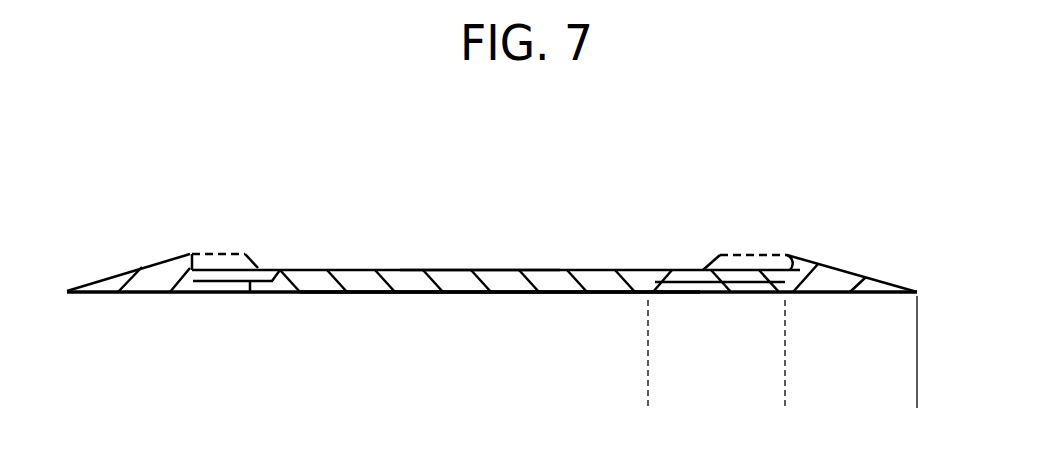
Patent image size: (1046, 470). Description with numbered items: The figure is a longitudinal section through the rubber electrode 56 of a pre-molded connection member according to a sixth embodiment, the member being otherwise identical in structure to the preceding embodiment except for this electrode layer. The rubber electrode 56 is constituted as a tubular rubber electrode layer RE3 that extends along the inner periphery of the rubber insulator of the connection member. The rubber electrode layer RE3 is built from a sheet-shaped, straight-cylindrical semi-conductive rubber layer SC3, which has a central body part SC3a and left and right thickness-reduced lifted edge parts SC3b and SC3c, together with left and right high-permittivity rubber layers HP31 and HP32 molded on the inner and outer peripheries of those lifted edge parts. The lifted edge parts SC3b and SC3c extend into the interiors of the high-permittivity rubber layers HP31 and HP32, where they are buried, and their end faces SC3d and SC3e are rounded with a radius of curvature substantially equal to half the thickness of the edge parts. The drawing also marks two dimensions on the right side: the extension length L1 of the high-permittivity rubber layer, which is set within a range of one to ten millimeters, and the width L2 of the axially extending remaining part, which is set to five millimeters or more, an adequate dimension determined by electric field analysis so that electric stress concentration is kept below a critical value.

The rubber electrode 56 is at (497, 247).
The rubber electrode layer RE3 is at (573, 262).
The semi-conductive rubber layer SC3 is at (609, 302).
The body part SC3a is at (420, 300).
The left lifted edge part SC3b is at (262, 300).
The right lifted edge part SC3c is at (719, 315).
The end face SC3d is at (191, 248).
The end face SC3e is at (790, 258).
The left high-permittivity rubber layer HP31 is at (170, 306).
The right high-permittivity rubber layer HP32 is at (812, 298).
The extension length L1 is at (785, 400).
The width of axially extending remaining part L2 is at (917, 400).